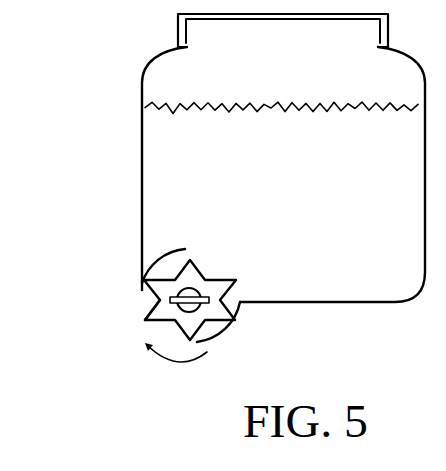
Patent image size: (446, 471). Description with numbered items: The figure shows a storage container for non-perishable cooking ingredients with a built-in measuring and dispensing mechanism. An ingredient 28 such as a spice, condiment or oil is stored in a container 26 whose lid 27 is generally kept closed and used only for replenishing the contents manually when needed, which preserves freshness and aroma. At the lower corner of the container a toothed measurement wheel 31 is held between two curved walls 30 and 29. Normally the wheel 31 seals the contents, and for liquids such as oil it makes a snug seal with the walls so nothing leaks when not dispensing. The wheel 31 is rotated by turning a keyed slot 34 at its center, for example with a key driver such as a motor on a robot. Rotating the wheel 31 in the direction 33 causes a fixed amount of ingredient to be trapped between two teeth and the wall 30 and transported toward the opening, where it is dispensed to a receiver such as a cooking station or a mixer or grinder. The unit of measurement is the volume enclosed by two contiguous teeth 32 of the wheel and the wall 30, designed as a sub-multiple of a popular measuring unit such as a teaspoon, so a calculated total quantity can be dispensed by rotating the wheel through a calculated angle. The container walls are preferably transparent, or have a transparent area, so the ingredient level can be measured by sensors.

The container 26 is at (140, 142).
The lid 27 is at (177, 37).
The ingredient 28 is at (257, 99).
The curved wall 29 is at (160, 255).
The curved wall 30 is at (227, 332).
The toothed measurement wheel 31 is at (158, 300).
The teeth 32 is at (143, 320).
The direction of rotation 33 is at (173, 362).
The keyed slot 34 is at (170, 302).